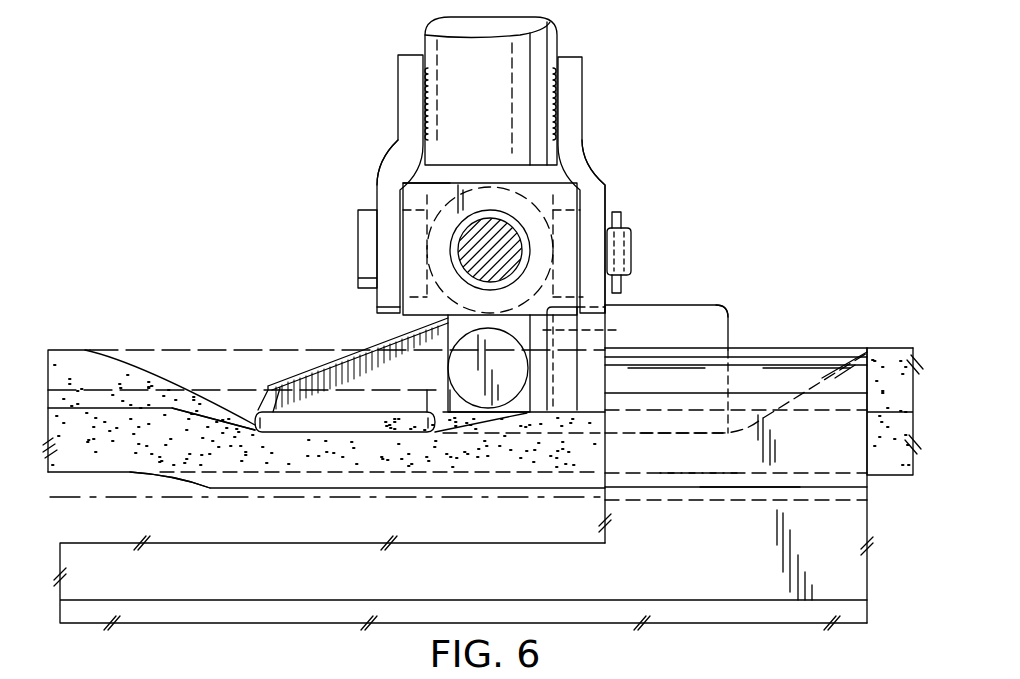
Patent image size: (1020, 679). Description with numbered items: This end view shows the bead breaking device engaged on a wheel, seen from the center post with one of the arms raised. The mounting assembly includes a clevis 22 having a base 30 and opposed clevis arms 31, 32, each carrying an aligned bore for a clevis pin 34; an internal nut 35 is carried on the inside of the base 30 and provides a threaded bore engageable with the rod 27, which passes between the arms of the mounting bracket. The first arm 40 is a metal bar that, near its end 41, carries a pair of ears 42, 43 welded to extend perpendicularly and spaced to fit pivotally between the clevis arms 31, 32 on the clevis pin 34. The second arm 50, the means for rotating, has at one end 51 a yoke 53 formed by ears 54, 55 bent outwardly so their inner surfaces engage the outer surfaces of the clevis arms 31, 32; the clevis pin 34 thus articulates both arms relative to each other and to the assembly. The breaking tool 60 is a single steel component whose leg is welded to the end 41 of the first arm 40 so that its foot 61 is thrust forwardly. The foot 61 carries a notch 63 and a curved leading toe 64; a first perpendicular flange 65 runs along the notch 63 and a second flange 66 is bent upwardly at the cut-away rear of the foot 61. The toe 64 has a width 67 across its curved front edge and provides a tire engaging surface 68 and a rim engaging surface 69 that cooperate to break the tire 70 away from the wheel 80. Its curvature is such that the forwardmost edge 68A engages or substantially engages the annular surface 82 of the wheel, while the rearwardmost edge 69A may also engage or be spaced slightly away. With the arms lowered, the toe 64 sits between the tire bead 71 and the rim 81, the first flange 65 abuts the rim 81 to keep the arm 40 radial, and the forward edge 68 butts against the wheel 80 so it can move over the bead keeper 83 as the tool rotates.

The clevis 22 is at (589, 185).
The rod 27 is at (483, 232).
The base 30 is at (440, 190).
The clevis arm 31 is at (412, 208).
The clevis arm 32 is at (600, 205).
The clevis pin 34 is at (636, 243).
The internal nut 35 is at (491, 190).
The first arm 40 is at (460, 323).
The end of first arm 41 is at (523, 412).
The ear 42 is at (400, 313).
The ear 43 is at (560, 328).
The second arm 50 is at (418, 34).
The end of second arm 51 is at (455, 92).
The yoke 53 is at (605, 148).
The ear 54 is at (388, 183).
The ear 55 is at (572, 97).
The breaking tool 60 is at (701, 290).
The foot 61 is at (648, 427).
The notch 63 is at (497, 382).
The toe 64 is at (340, 410).
The first perpendicular flange 65 is at (708, 318).
The second flange 66 is at (373, 368).
The width 67 is at (357, 427).
The tire engaging surface 68 is at (253, 420).
The forwardmost edge 68A is at (260, 430).
The rim engaging surface 69 is at (457, 415).
The rearwardmost edge 69A is at (427, 422).
The tire 70 is at (77, 339).
The tire bead 71 is at (303, 463).
The wheel 80 is at (832, 338).
The rim 81 is at (773, 368).
The annular surface 82 is at (753, 487).
The bead keeper 83 is at (692, 447).